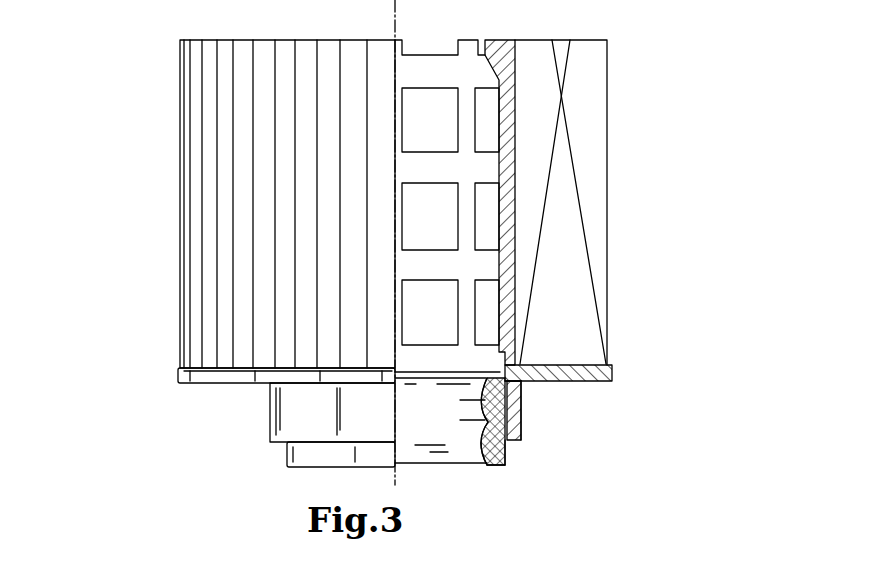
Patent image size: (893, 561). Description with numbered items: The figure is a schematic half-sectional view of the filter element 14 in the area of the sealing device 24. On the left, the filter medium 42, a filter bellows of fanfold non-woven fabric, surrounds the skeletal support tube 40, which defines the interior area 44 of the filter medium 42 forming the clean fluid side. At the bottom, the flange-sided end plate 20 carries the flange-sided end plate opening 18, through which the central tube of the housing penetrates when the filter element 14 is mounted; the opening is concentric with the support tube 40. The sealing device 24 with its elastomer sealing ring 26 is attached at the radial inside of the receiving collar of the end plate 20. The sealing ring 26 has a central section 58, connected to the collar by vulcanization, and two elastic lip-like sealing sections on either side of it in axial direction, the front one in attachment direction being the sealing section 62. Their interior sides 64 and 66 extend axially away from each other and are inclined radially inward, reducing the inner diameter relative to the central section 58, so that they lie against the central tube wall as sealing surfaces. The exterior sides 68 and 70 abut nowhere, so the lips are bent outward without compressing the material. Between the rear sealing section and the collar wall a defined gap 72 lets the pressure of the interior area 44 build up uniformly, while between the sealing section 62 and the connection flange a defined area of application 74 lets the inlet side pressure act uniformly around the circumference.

The filter element 14 is at (227, 242).
The flange-sided end plate opening 18 is at (412, 380).
The flange-sided end plate 20 is at (612, 374).
The sealing device 24 is at (481, 472).
The sealing ring 26 is at (516, 441).
The skeletal support tube 40 is at (501, 60).
The filter medium 42 is at (303, 82).
The interior area 44 is at (432, 103).
The central section 58 is at (512, 421).
The sealing section 62 is at (493, 462).
The interior side 64 is at (485, 387).
The interior side 66 is at (484, 448).
The exterior side 68 is at (506, 383).
The exterior side 70 is at (503, 452).
The gap 72 is at (521, 366).
The area of application 74 is at (507, 464).